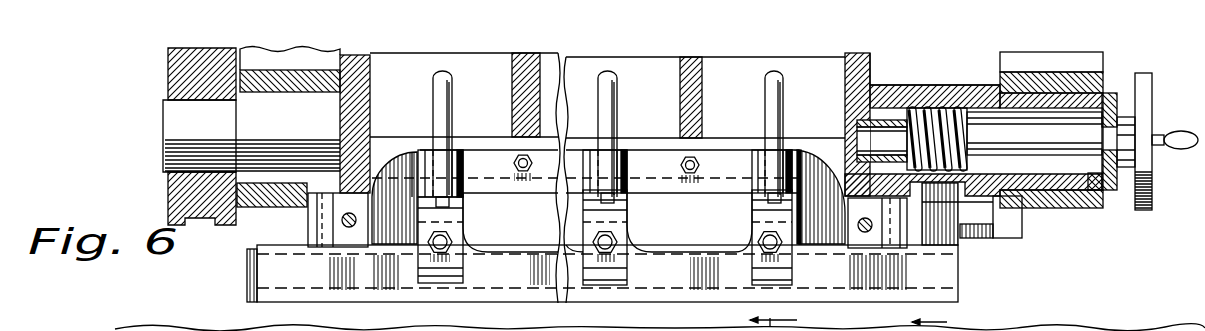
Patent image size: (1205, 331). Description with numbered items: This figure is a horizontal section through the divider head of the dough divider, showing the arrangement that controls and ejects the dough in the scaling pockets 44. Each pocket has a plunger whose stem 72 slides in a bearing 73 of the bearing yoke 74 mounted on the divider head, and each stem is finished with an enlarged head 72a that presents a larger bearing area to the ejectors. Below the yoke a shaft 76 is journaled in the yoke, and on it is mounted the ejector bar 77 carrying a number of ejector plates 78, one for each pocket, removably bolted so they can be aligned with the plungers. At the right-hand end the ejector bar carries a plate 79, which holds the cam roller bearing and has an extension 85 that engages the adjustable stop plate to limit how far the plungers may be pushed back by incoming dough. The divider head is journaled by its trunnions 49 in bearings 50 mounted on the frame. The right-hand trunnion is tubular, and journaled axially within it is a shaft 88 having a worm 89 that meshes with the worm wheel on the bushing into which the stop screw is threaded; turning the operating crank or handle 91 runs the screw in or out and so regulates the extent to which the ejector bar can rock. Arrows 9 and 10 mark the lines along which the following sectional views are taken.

The scaling pockets 44 is at (607, 178).
The stems 72 is at (452, 94).
The bearings 73 is at (457, 150).
The enlarged heads 72a is at (463, 195).
The bearing yoke 74 is at (560, 188).
The ejector plates 78 is at (463, 220).
The ejector bar 77 is at (694, 260).
The shaft 76 is at (958, 281).
The plate 79 is at (960, 222).
The extension 85 is at (1022, 228).
The trunnions 49 is at (1075, 207).
The bearings 50 is at (1102, 207).
The shaft 88 is at (1072, 130).
The worm 89 is at (946, 125).
The operating crank or handle 91 is at (1152, 178).
The direction arrow 9 is at (773, 312).
The direction arrow 10 is at (942, 315).